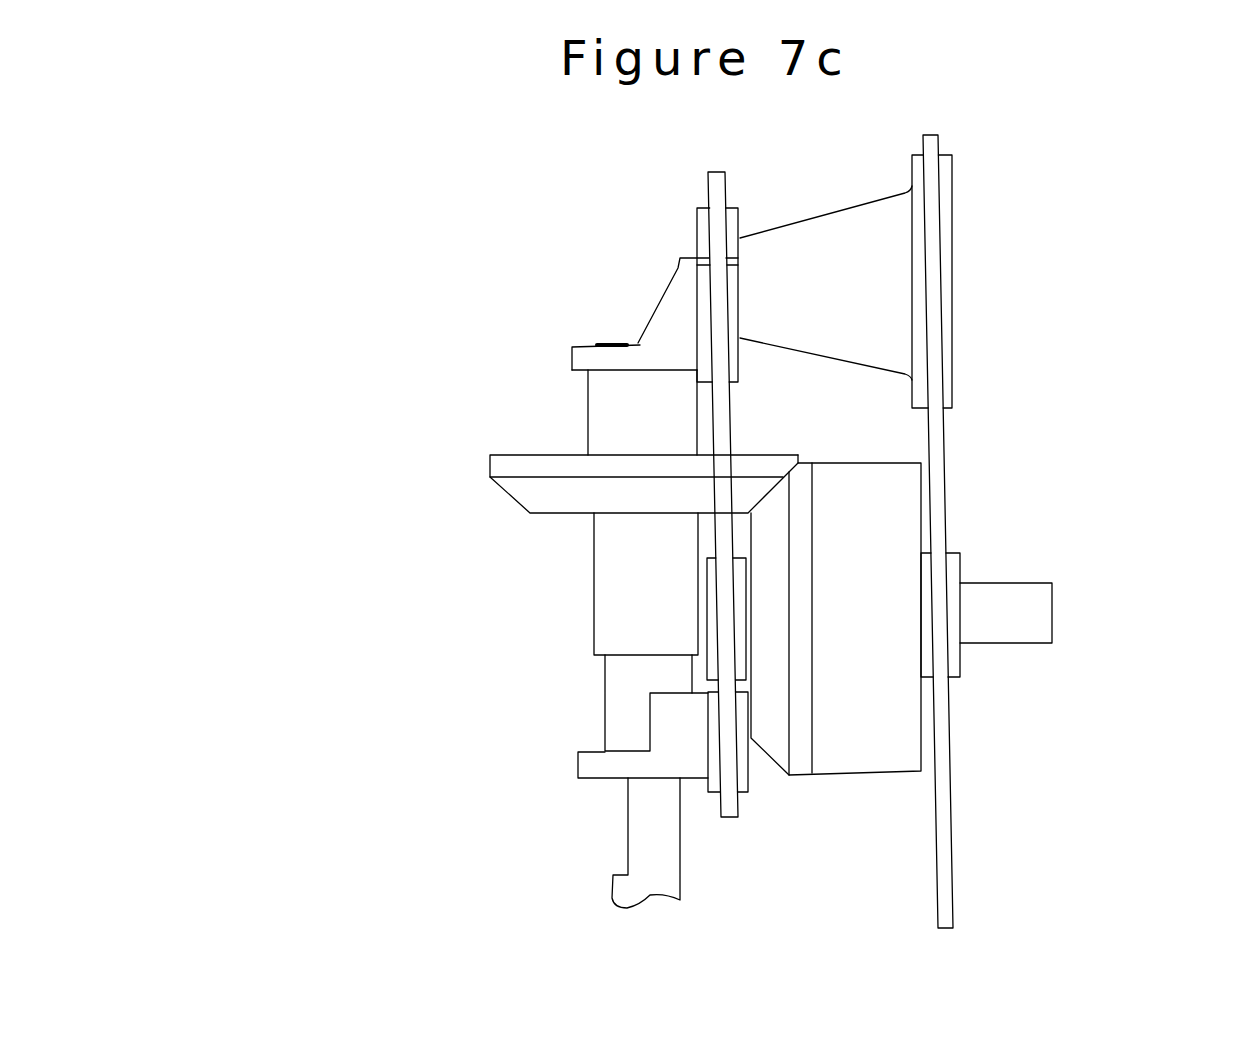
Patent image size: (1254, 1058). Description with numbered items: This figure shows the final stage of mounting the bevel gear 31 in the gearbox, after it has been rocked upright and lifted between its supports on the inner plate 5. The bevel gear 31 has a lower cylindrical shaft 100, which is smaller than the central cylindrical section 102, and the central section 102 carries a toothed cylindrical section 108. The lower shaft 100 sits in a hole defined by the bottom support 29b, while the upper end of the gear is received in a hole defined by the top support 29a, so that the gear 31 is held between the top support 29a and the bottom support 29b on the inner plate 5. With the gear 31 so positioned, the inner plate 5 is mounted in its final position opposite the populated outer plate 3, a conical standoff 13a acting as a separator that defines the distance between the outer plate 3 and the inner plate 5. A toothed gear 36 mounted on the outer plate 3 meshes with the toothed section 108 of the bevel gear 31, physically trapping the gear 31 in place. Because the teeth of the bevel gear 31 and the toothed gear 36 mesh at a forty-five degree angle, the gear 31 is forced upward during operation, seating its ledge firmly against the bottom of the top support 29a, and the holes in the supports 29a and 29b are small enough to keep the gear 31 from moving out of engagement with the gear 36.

The inner plate 5 is at (716, 189).
The conical element (standoff) 13a is at (823, 250).
The outer plate 3 is at (938, 458).
The toothed gear 36 is at (892, 748).
The toothed cylindrical section 108 is at (516, 470).
The central cylindrical section 102 is at (615, 623).
The lower cylindrical shaft 100 is at (625, 700).
The top support 29a is at (632, 355).
The bottom support 29b is at (598, 765).
The bevel gear 31 is at (515, 583).